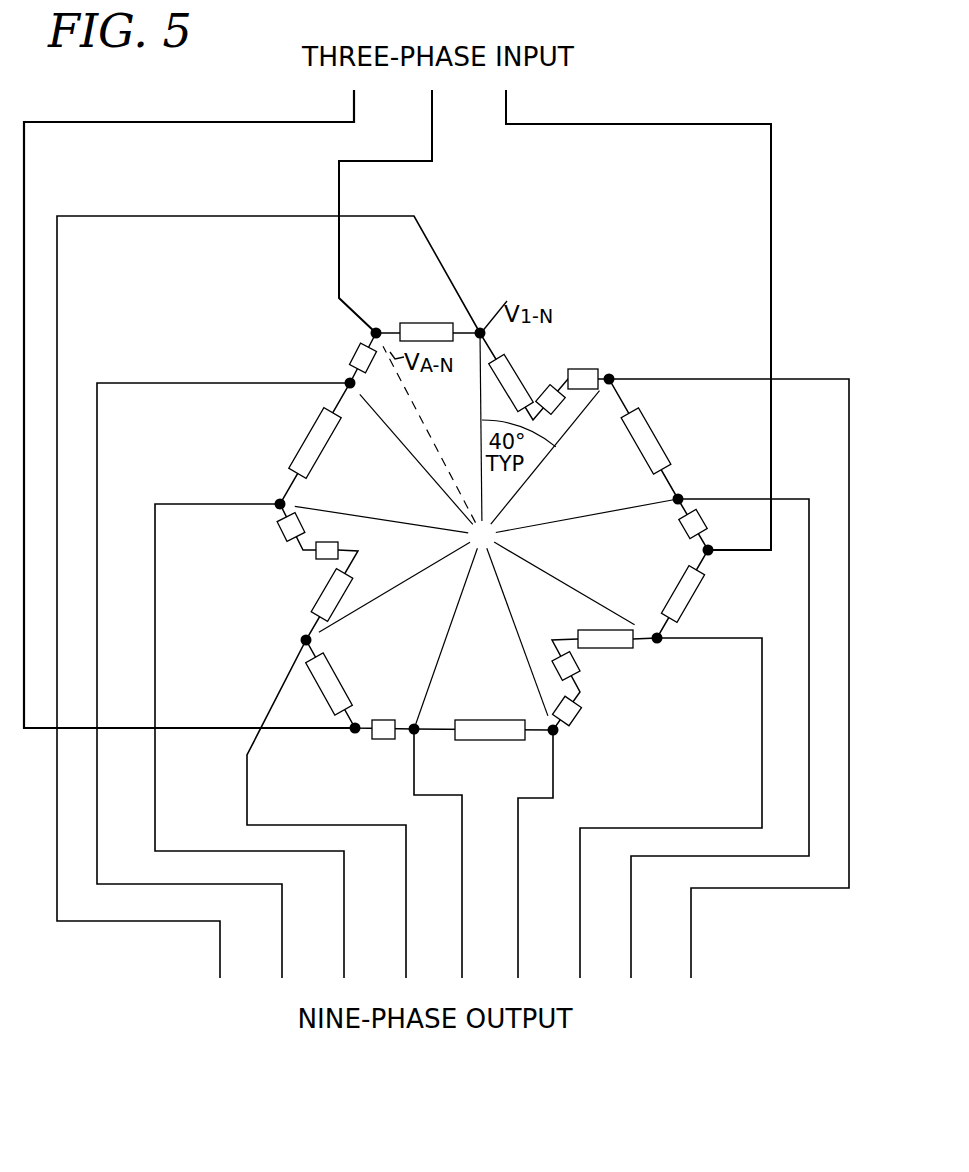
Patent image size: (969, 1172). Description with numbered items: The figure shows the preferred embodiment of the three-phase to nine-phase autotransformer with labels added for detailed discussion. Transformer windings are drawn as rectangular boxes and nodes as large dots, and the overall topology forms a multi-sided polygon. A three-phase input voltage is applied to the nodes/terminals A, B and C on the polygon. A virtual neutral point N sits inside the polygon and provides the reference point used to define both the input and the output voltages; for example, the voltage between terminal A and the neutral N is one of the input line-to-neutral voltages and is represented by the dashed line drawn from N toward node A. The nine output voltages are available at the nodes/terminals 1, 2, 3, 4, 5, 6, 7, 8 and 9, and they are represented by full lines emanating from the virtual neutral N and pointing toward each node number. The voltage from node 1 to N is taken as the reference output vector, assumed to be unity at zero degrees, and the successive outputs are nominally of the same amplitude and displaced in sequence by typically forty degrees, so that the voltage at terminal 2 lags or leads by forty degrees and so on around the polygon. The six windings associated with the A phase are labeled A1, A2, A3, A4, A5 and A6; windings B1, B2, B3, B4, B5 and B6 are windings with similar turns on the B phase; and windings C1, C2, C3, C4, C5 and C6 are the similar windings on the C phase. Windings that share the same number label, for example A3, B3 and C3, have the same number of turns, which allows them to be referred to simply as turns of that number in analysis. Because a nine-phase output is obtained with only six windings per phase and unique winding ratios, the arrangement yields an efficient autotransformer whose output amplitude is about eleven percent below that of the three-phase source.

The output node 1 is at (484, 330).
The output node 2 is at (609, 378).
The output node 3 is at (678, 499).
The output node 4 is at (657, 638).
The output node 5 is at (553, 730).
The output node 6 is at (414, 729).
The output node 7 is at (306, 640).
The output node 8 is at (280, 504).
The output node 9 is at (350, 383).
The input terminal A is at (379, 329).
The input terminal B is at (710, 551).
The input terminal C is at (354, 729).
The virtual neutral point N is at (482, 536).
The winding A1 is at (468, 740).
The winding A2 is at (380, 739).
The winding A3 is at (316, 559).
The winding A4 is at (407, 323).
The winding A5 is at (571, 369).
The winding A6 is at (623, 648).
The winding B1 is at (303, 456).
The winding B2 is at (357, 360).
The winding B3 is at (559, 388).
The winding B4 is at (694, 598).
The winding B5 is at (579, 713).
The winding B6 is at (320, 596).
The winding C1 is at (654, 428).
The winding C2 is at (703, 519).
The winding C3 is at (577, 663).
The winding C4 is at (322, 676).
The winding C5 is at (278, 526).
The winding C6 is at (516, 367).